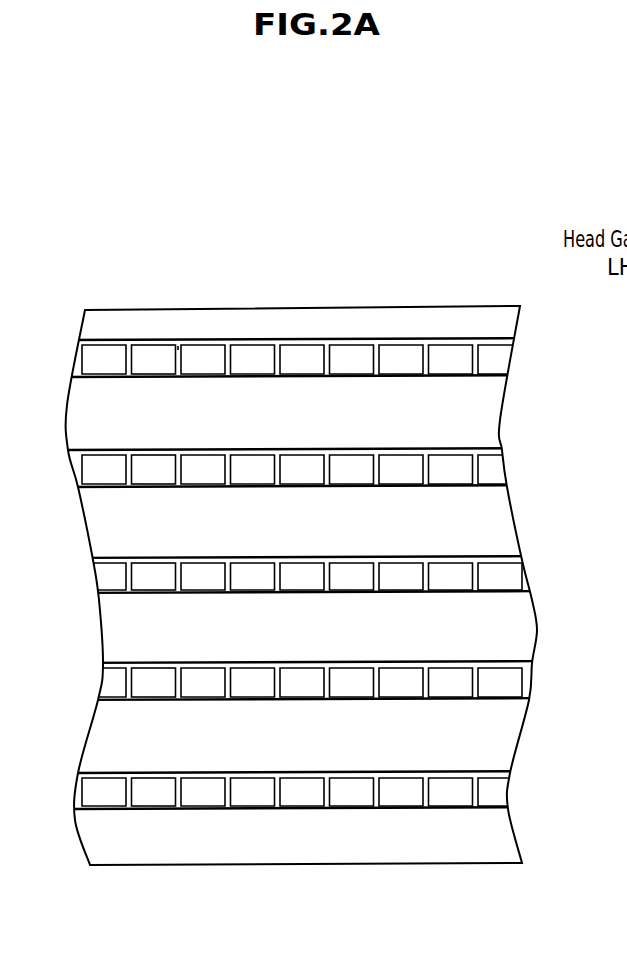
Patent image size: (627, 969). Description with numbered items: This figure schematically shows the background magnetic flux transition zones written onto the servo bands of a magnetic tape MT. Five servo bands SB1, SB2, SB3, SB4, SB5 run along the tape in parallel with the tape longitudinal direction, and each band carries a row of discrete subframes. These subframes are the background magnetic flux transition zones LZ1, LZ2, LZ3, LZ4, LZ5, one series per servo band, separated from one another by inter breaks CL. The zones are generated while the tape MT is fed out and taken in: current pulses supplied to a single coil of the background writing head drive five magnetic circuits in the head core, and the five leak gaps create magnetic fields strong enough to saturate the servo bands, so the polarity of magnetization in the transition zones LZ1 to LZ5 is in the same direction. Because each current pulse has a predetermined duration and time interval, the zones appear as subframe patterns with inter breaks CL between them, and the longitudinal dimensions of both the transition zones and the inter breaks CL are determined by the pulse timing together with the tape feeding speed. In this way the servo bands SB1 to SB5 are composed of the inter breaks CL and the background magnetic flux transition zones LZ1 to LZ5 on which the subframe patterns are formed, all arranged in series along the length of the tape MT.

The magnetic tape MT is at (455, 317).
The servo band SB1 is at (502, 358).
The servo band SB2 is at (500, 468).
The servo band SB3 is at (517, 573).
The servo band SB4 is at (528, 683).
The servo band SB5 is at (505, 792).
The background magnetic flux transition zone LZ1 is at (152, 350).
The background magnetic flux transition zone LZ2 is at (152, 458).
The background magnetic flux transition zone LZ3 is at (152, 567).
The background magnetic flux transition zone LZ4 is at (152, 675).
The background magnetic flux transition zone LZ5 is at (152, 782).
The inter break CL is at (178, 347).